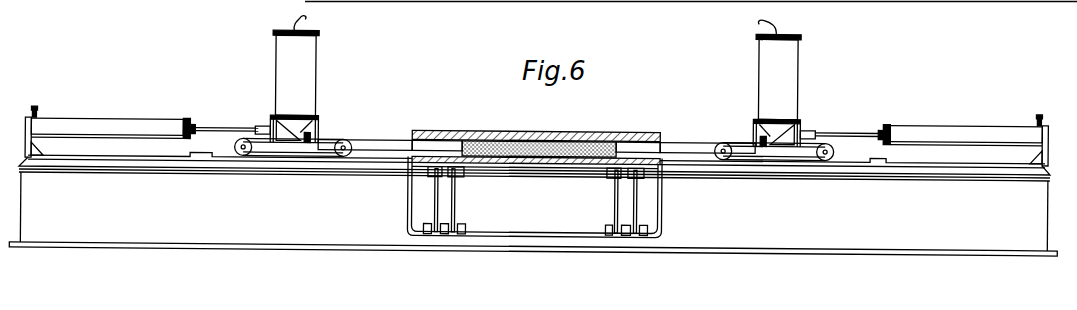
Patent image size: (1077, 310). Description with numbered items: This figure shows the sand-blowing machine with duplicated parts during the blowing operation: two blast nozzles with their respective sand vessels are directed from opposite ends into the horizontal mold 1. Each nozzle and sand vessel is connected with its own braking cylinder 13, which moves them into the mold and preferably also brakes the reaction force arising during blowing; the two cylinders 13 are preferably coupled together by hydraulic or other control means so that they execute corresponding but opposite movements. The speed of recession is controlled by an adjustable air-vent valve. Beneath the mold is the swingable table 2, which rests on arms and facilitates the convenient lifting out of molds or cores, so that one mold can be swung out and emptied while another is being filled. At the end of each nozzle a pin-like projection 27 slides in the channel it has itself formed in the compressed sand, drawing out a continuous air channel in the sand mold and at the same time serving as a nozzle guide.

The horizontal mold 1 is at (433, 127).
The swingable table 2 is at (530, 176).
The pressure-air or fluid cylinder 13 is at (925, 124).
The pin-like projection 27 is at (468, 137).